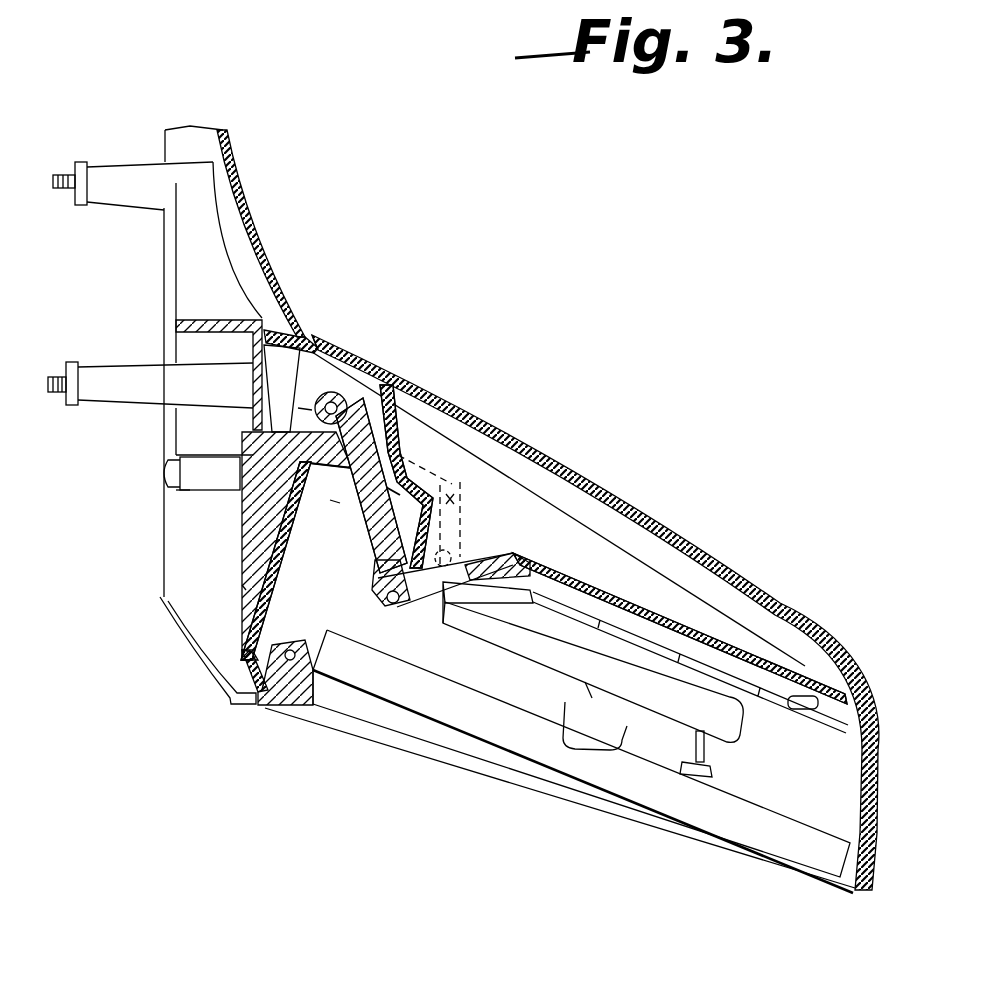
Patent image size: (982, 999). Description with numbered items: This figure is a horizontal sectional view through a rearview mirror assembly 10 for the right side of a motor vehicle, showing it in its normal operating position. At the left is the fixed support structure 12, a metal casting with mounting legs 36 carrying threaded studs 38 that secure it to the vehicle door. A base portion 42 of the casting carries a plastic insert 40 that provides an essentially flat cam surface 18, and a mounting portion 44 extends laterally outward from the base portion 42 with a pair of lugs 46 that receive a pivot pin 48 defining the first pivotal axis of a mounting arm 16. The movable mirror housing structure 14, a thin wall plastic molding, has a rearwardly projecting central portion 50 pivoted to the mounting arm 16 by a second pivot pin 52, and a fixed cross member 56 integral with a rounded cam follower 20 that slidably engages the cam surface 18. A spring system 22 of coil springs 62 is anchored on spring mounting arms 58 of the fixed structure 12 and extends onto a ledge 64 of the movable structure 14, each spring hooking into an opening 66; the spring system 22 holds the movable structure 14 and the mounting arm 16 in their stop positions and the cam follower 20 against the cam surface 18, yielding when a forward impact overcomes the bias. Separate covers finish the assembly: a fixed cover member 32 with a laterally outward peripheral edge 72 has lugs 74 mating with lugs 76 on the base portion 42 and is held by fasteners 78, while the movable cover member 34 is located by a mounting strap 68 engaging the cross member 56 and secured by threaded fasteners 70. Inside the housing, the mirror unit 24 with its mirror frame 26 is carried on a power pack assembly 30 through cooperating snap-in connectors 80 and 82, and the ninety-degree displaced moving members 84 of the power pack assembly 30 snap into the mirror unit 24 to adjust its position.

The rearview mirror assembly 10 is at (458, 346).
The fixed support structure 12 is at (162, 268).
The movable mirror housing structure 14 is at (810, 666).
The mounting arm 16 is at (392, 470).
The cam surface 18 is at (282, 588).
The cam follower 20 is at (240, 677).
The spring system 22 is at (514, 550).
The mirror unit 24 is at (545, 773).
The mirror frame 26 is at (753, 835).
The power pack assembly 30 is at (748, 740).
The fixed cover member 32 is at (195, 640).
The movable cover member 34 is at (674, 520).
The mounting legs 36 is at (142, 165).
The threaded studs 38 is at (65, 175).
The plastic insert 40 is at (270, 610).
The base portion 42 is at (241, 540).
The mounting portion 44 is at (291, 561).
The lugs 46 is at (305, 410).
The pivot pin 48 is at (340, 393).
The central portion 50 is at (412, 610).
The pivot pin 52 is at (385, 603).
The cross member 56 is at (315, 662).
The spring mounting arms 58 is at (443, 510).
The coil springs 62 is at (510, 584).
The ledge 64 is at (552, 580).
The opening 66 is at (825, 692).
The mounting strap 68 is at (322, 706).
The threaded fasteners 70 is at (242, 592).
The laterally outward peripheral edge 72 is at (307, 335).
The lugs 74 is at (185, 490).
The lugs 76 is at (228, 492).
The fasteners 78 is at (170, 484).
The snap-in connector 80 is at (588, 689).
The snap-in connector 82 is at (572, 710).
The moving members 84 is at (712, 766).